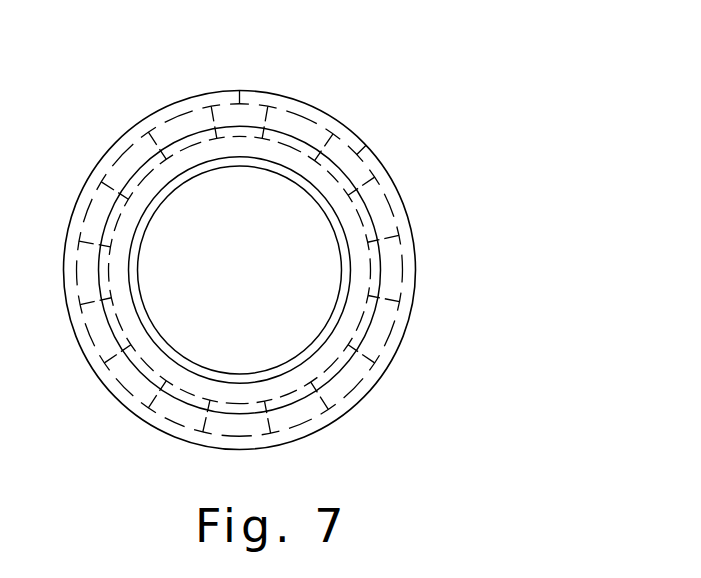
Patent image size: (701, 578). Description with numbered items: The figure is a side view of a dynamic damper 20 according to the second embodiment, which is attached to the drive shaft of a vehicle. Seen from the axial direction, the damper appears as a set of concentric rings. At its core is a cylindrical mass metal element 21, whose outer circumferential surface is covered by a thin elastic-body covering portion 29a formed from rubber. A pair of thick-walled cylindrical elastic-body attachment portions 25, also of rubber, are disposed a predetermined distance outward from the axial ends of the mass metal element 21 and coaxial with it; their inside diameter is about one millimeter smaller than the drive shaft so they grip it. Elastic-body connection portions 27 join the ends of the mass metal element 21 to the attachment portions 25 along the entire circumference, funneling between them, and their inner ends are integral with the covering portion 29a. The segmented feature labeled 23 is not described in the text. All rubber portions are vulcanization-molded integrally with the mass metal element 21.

The dynamic damper 20 is at (297, 81).
The cylindrical mass metal element 21 is at (318, 124).
The ring segments 23 is at (238, 97).
The elastic-body attachment portions 25 is at (370, 325).
The elastic-body connection portions 27 is at (392, 277).
The elastic-body covering portion 29a is at (398, 210).